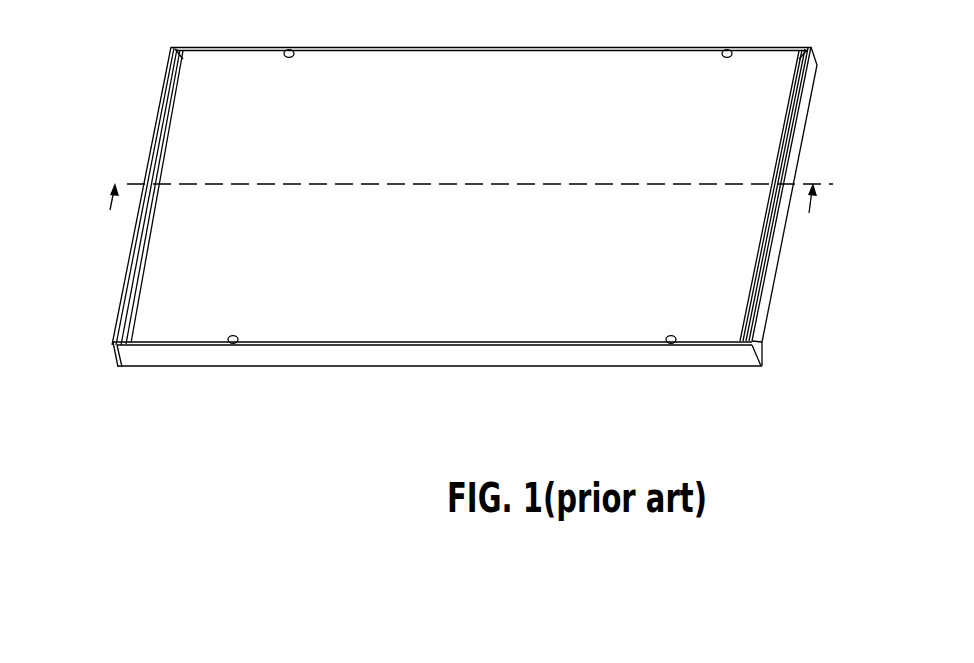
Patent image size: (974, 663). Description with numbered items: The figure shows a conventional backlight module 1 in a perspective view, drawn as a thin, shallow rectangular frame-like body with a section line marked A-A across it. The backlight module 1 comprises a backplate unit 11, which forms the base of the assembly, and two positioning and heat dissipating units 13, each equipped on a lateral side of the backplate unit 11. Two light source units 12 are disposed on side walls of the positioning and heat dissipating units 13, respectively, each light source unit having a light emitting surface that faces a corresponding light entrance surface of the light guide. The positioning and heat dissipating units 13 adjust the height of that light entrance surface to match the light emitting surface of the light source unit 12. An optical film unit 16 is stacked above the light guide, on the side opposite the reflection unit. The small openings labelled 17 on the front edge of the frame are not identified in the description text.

The backlight module 1 is at (517, 231).
The backplate unit 11 is at (332, 360).
The light source unit 12 is at (125, 337).
The positioning and heat dissipating unit 13 is at (118, 367).
The optical film unit 16 is at (255, 316).
The mounting hole 17 is at (671, 344).